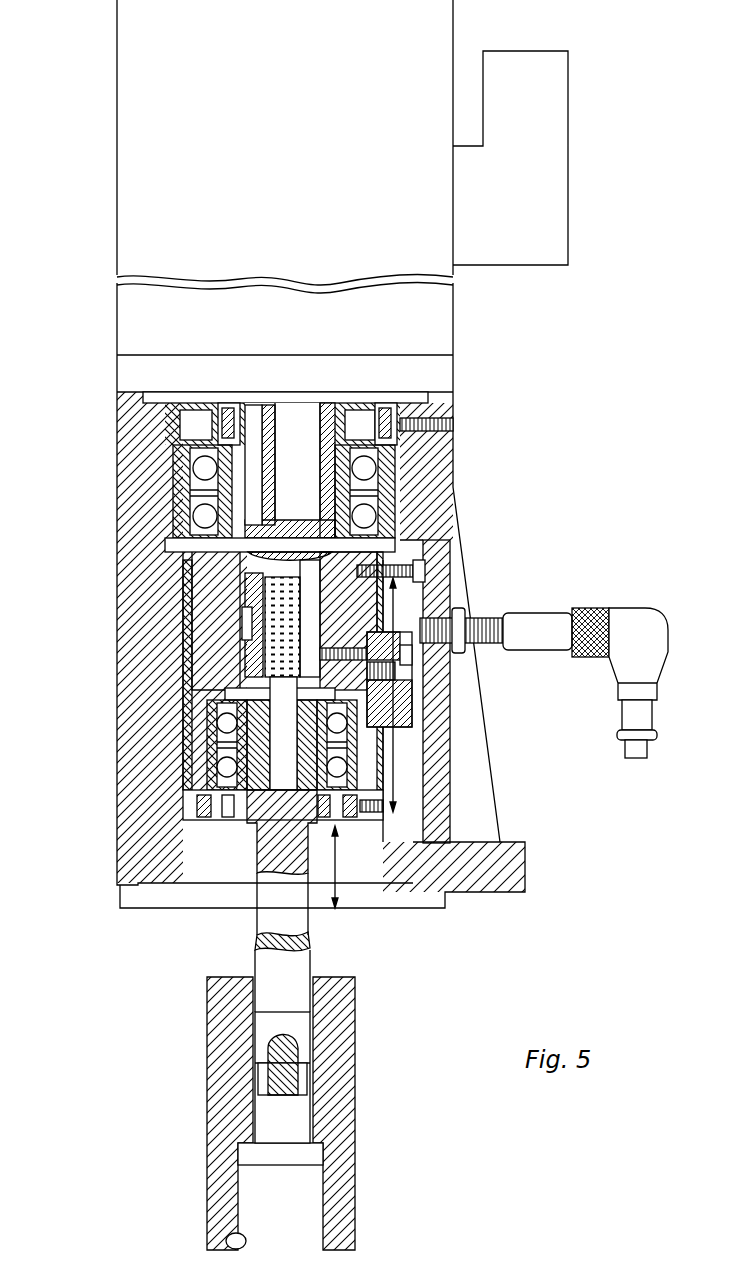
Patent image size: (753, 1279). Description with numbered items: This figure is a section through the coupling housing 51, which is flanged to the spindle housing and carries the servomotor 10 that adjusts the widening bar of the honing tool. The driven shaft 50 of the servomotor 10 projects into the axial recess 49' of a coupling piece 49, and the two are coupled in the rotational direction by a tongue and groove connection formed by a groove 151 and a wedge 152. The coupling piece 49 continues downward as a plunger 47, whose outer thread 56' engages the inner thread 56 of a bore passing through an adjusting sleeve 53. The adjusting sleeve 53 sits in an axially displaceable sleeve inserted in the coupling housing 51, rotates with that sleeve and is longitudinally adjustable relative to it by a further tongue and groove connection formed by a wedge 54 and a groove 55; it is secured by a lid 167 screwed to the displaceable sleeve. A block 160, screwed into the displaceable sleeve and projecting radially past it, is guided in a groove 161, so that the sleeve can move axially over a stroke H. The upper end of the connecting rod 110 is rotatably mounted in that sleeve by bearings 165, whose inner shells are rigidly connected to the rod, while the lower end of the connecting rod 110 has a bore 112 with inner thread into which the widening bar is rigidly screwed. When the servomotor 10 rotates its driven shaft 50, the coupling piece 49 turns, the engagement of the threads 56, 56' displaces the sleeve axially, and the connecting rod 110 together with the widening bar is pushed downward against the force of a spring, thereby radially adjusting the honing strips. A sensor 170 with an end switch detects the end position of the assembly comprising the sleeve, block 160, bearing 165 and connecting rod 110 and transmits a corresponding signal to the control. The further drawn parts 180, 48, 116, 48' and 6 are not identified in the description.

The servomotor 10 is at (127, 163).
The coupling housing 51 is at (125, 605).
The groove 161 is at (407, 755).
The driven shaft 50 is at (303, 470).
The upper ball bearing 180 is at (200, 470).
The wedge 152 is at (215, 513).
The groove 151 is at (248, 482).
The coupling piece 49 is at (455, 472).
The lid 167 is at (290, 548).
The axial recess 49' is at (443, 563).
The adjusting sleeve 53 is at (192, 590).
The wedge 54 is at (245, 650).
The groove 55 is at (242, 632).
The inner thread 56 is at (314, 618).
The outer thread 56' is at (428, 671).
The block 160 is at (407, 710).
The plunger 47 is at (245, 690).
The bearings 165 is at (282, 713).
The lower ball bearing 48 is at (238, 745).
The retaining plate 116 is at (210, 812).
The shaft section 48' is at (258, 833).
The stroke H is at (398, 868).
The connecting rod 110 is at (322, 912).
The tube 6 is at (210, 1247).
The bore 112 is at (303, 1088).
The sensor 170 is at (535, 627).